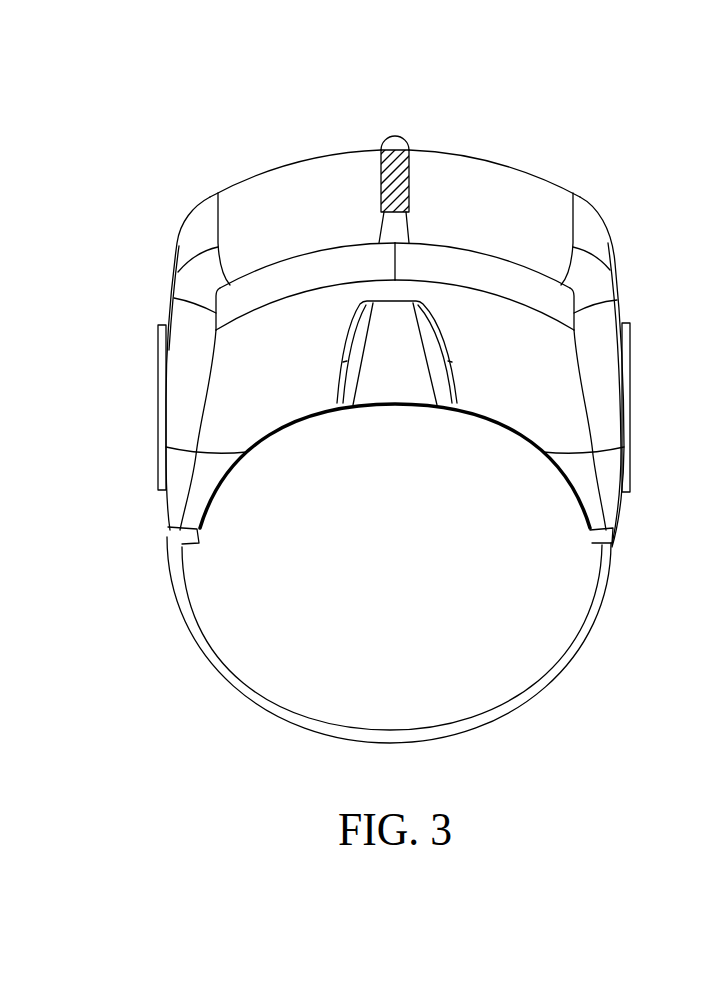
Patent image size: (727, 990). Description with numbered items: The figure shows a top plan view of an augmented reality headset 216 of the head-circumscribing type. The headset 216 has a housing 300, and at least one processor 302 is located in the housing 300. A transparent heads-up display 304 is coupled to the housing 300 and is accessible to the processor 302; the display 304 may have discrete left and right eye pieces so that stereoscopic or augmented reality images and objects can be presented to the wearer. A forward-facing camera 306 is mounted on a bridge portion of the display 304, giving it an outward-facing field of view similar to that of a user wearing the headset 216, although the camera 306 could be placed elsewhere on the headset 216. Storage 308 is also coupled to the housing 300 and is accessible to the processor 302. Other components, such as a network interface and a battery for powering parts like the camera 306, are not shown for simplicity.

The headset 216 is at (144, 53).
The housing 300 is at (560, 668).
The processor 302 is at (280, 297).
The display 304 is at (290, 161).
The camera 306 is at (393, 134).
The storage 308 is at (490, 294).